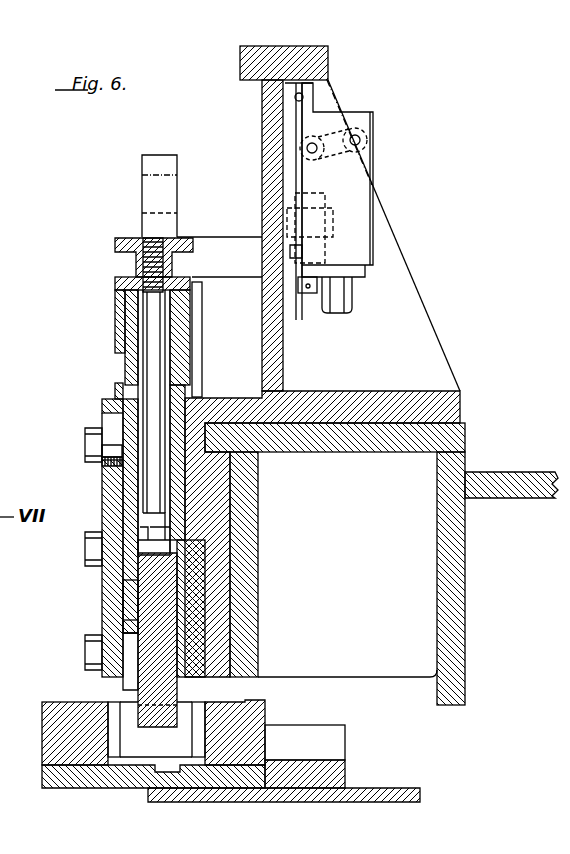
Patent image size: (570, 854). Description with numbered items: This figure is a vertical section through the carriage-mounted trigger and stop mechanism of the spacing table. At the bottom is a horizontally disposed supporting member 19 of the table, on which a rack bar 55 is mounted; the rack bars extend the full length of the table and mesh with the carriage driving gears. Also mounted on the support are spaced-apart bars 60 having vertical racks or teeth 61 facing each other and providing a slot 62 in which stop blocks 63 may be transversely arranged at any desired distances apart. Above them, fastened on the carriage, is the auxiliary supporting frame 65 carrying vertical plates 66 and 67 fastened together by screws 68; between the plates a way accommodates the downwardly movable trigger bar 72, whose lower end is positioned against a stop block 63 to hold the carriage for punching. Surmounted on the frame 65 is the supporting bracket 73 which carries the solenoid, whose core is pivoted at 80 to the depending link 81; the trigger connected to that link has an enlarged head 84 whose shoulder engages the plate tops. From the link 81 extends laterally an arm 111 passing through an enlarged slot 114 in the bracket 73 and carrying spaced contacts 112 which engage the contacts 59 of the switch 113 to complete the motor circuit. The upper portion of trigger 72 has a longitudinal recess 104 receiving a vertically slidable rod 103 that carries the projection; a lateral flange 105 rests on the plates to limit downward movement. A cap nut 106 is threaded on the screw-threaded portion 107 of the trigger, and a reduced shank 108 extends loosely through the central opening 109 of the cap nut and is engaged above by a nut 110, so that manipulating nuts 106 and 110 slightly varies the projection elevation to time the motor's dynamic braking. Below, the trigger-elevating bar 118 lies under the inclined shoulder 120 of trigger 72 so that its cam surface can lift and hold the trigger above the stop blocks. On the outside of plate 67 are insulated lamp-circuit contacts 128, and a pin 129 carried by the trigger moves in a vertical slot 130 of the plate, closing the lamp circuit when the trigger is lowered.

The supporting member 19 is at (410, 790).
The rack bar 55 is at (305, 756).
The contacts 59 is at (367, 160).
The bar 60 is at (62, 708).
The racks or teeth 61 is at (114, 706).
The slot 62 is at (188, 707).
The stop block 63 is at (156, 729).
The auxiliary supporting frame 65 is at (381, 564).
The vertical plate 66 is at (213, 410).
The vertical plate 67 is at (102, 509).
The screw 68 is at (88, 549).
The trigger member or bar 72 is at (145, 589).
The supporting bracket 73 is at (262, 188).
The pivot 80 is at (142, 175).
The depending link 81 is at (160, 161).
The enlarged head 84 is at (202, 337).
The vertically slidable rod 103 is at (150, 368).
The recess 104 is at (102, 410).
The flange 105 is at (115, 391).
The cap nut 106 is at (115, 310).
The screw-threaded portion 107 is at (125, 340).
The reduced shank 108 is at (148, 240).
The central opening 109 is at (115, 284).
The nut 110 is at (115, 244).
The arm 111 is at (219, 257).
The contacts 112 is at (330, 197).
The switch 113 is at (350, 237).
The slot 114 is at (266, 230).
The trigger-elevating bar 118 is at (130, 626).
The inclined shoulder 120 is at (140, 585).
The contacts 128 is at (98, 463).
The pin 129 is at (85, 453).
The vertical slot 130 is at (85, 433).